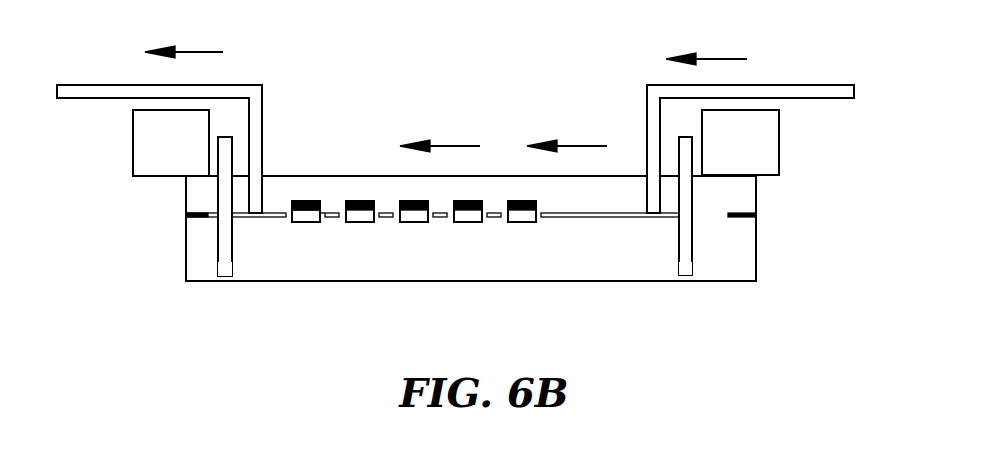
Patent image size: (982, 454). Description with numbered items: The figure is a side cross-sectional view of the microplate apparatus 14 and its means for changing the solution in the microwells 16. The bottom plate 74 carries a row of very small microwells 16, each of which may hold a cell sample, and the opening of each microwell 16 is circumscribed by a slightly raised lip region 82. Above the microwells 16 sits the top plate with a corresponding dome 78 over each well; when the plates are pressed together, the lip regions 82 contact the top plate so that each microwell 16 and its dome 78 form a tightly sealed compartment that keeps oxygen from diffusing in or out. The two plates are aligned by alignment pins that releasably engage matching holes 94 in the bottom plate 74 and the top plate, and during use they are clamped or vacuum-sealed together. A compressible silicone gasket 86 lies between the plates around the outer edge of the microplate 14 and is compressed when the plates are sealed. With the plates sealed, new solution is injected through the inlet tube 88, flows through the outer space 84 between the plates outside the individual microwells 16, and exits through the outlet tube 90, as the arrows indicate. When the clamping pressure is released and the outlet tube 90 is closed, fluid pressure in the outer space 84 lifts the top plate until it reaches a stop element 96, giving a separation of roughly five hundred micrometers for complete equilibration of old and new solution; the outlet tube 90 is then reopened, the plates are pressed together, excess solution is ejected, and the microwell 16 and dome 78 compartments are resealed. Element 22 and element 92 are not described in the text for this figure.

The microplate apparatus 14 is at (446, 99).
The microwell 16 is at (305, 222).
The component 22 is at (303, 201).
The bottom plate 74 is at (278, 262).
The dome 78 is at (320, 207).
The lip region 82 is at (320, 217).
The outer space 84 is at (582, 217).
The compressible gasket 86 is at (186, 215).
The inlet tube 88 is at (811, 91).
The outlet tube 90 is at (84, 91).
The rod end 92 is at (225, 268).
The matching holes 94 is at (218, 221).
The stop element 96 is at (456, 143).